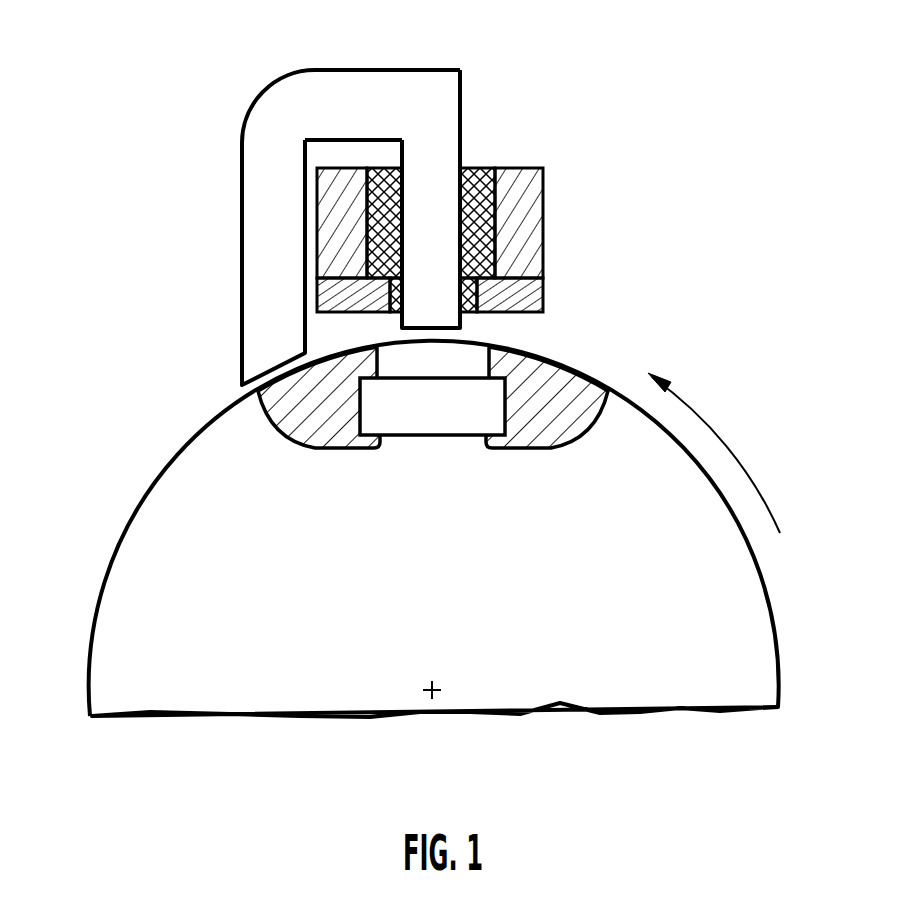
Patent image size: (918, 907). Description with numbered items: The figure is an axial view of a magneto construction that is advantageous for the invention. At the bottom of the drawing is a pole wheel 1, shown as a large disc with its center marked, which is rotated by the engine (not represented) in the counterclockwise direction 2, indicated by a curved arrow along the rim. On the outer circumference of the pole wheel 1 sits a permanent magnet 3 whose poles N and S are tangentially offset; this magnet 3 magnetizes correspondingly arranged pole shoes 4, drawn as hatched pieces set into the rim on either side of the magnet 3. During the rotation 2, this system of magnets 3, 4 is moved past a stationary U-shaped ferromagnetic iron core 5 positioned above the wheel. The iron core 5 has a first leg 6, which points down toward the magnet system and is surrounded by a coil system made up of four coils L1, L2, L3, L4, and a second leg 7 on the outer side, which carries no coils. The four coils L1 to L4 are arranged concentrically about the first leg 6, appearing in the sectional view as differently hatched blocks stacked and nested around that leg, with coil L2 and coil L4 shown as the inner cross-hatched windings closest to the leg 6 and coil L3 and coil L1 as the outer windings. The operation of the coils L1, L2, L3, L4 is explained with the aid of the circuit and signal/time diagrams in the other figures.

The pole wheel 1 is at (112, 567).
The counterclockwise direction 2 is at (737, 458).
The permanent magnet 3 is at (462, 430).
The pole shoes 4 is at (338, 440).
The U-shaped ferromagnetic iron core 5 is at (348, 197).
The first leg 6 is at (448, 128).
The second leg 7 is at (245, 237).
The coil L1 is at (540, 293).
The coil L2 is at (477, 180).
The coil L3 is at (533, 223).
The coil L4 is at (493, 313).